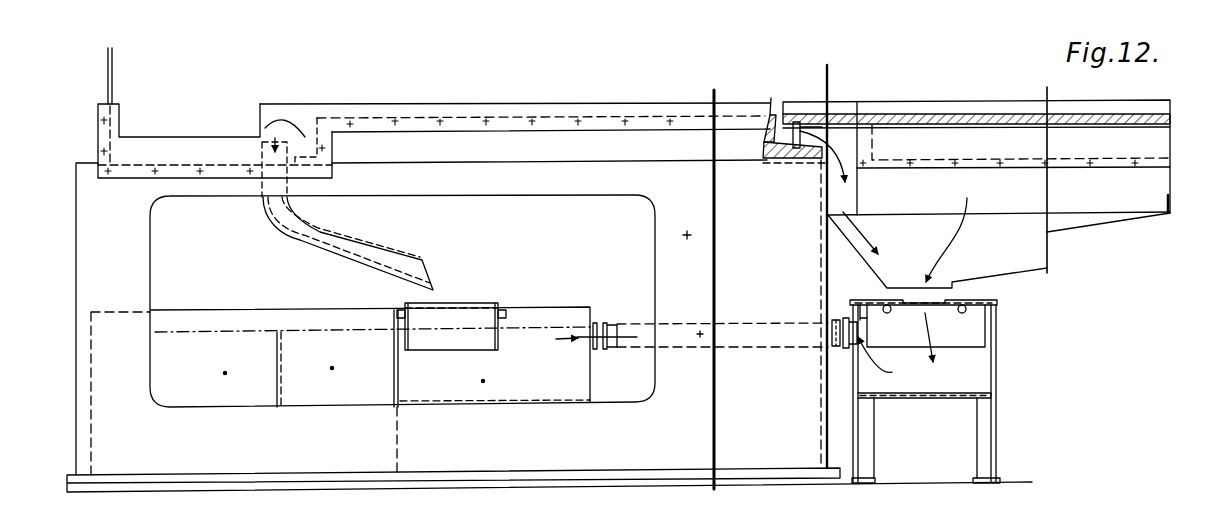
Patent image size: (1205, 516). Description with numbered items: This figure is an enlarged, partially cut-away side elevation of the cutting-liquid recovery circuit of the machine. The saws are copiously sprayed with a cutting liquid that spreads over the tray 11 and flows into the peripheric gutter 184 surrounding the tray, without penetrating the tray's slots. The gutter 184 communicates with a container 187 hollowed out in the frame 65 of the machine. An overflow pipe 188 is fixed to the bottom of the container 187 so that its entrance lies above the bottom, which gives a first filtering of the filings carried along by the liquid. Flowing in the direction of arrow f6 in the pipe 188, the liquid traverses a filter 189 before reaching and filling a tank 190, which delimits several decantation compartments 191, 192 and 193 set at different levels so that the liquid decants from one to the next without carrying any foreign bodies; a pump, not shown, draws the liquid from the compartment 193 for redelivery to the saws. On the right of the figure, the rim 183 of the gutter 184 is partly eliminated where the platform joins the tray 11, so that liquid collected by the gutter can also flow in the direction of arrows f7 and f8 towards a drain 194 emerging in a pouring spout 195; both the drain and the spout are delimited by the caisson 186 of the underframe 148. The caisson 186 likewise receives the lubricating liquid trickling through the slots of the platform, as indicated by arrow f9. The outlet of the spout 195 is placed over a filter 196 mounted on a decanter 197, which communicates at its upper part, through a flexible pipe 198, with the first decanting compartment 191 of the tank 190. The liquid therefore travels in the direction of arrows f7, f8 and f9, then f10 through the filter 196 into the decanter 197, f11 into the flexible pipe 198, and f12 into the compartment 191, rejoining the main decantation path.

The tray 11 is at (603, 116).
The frame 65 is at (605, 431).
The underframe 148 is at (960, 113).
The rim 183 is at (790, 149).
The gutter 184 is at (780, 135).
The caisson 186 is at (1082, 229).
The container 187 is at (146, 165).
The overflow pipe 188 is at (263, 212).
The filter 189 is at (477, 303).
The tank 190 is at (352, 405).
The first decanting compartment 191 is at (487, 372).
The decantation compartment 192 is at (332, 358).
The decantation compartment 193 is at (227, 363).
The drain 194 is at (845, 210).
The pouring spout 195 is at (868, 267).
The filter 196 is at (995, 326).
The decanter 197 is at (991, 384).
The flexible pipe 198 is at (781, 324).
The arrow f6 is at (283, 153).
The arrow f7 is at (828, 166).
The arrow f8 is at (865, 233).
The arrow f9 is at (946, 240).
The arrow f10 is at (942, 345).
The arrow f11 is at (886, 354).
The arrow f12 is at (596, 342).